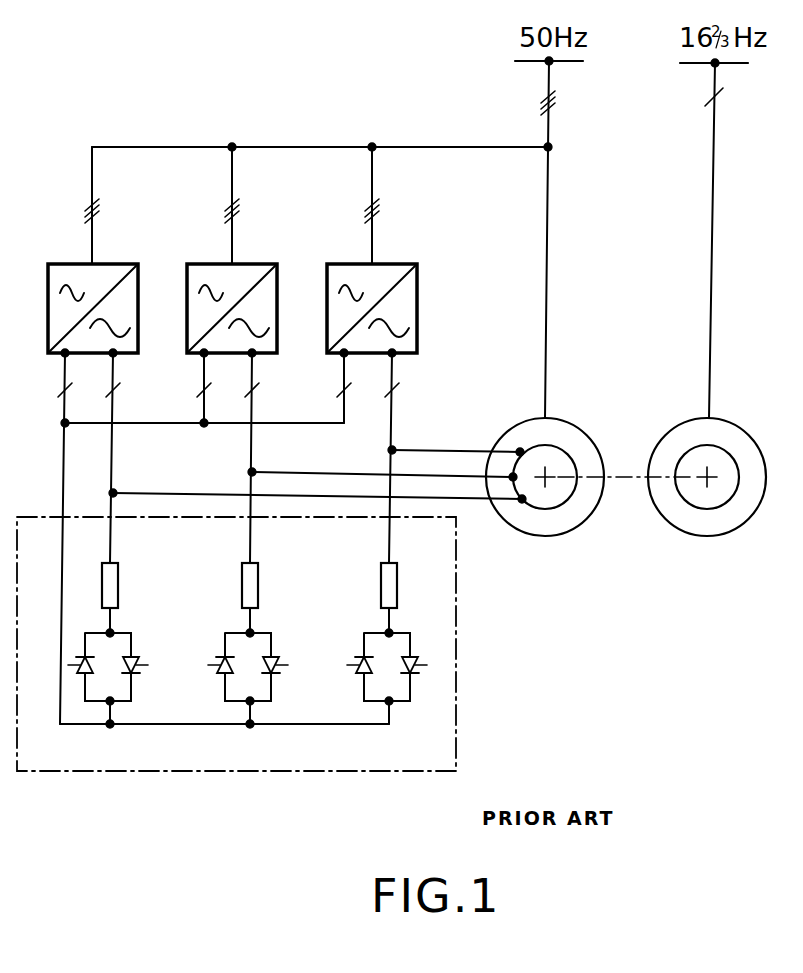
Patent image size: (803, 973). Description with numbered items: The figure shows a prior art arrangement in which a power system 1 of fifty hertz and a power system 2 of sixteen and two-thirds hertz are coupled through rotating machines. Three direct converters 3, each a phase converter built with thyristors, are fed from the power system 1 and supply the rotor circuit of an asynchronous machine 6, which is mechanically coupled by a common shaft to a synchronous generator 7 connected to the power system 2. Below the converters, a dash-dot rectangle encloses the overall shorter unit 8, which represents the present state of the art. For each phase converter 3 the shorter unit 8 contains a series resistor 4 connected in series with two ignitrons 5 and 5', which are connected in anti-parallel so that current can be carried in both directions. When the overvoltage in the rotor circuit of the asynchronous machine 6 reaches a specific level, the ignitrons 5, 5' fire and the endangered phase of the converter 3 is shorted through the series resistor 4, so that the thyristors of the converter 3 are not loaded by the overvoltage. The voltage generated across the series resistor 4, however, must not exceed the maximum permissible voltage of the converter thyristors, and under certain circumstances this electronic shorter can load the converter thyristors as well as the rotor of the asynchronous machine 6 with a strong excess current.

The power system of 50 Hz 1 is at (525, 61).
The power system of 16⅔ Hz 2 is at (692, 63).
The direct converter 3 is at (116, 264).
The series resistor 4 is at (118, 588).
The ignitron 5 is at (217, 637).
The ignitron 5' is at (285, 637).
The asynchronous machine 6 is at (575, 425).
The synchronous generator 7 is at (735, 425).
The shorter unit 8 is at (458, 705).